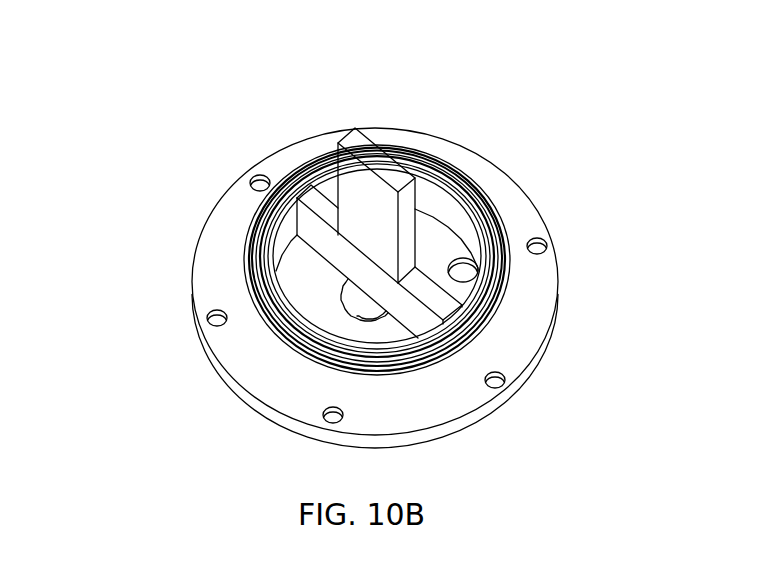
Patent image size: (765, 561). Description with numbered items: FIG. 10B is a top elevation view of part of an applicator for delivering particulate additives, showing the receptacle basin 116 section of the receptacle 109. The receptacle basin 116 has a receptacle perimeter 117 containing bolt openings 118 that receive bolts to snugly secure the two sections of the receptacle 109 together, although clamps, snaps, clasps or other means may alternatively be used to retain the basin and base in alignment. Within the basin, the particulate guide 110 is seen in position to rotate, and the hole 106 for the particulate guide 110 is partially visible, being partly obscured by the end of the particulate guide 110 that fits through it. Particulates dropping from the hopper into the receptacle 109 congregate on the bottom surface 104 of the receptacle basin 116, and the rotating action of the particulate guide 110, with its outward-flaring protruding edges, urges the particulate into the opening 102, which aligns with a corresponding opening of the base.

The opening 102 is at (466, 271).
The bottom surface 104 is at (300, 277).
The hole 106 is at (352, 304).
The receptacle 109 is at (475, 141).
The particulate guide 110 is at (361, 192).
The receptacle basin 116 is at (281, 228).
The receptacle perimeter 117 is at (450, 383).
The bolt openings 118 is at (552, 243).